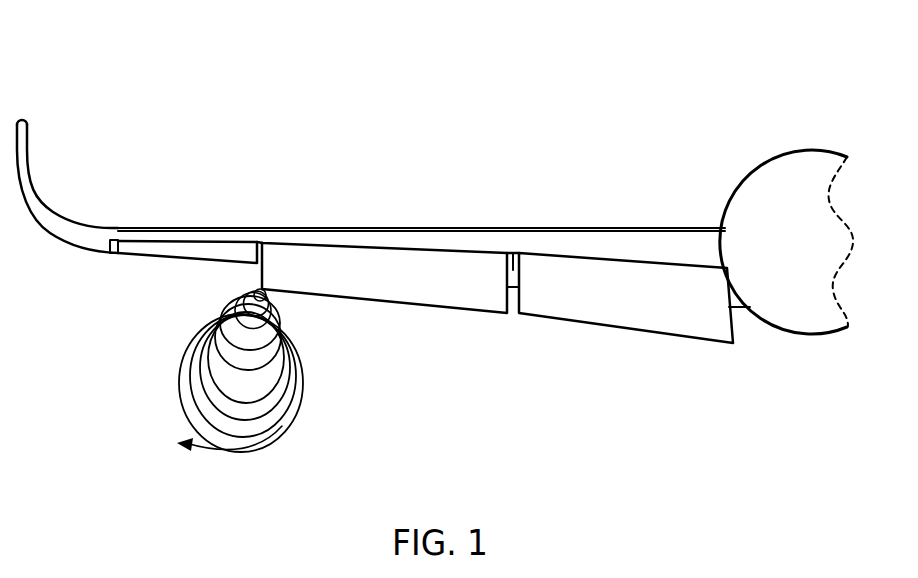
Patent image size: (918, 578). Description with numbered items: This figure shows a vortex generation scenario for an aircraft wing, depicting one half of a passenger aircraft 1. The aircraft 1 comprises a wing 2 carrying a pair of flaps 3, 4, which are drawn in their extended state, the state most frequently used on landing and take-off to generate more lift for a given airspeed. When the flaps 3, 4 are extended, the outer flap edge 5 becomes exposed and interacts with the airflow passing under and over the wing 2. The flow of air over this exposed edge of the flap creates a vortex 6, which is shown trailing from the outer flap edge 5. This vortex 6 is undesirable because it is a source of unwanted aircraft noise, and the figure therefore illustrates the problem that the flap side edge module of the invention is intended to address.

The passenger aircraft 1 is at (746, 112).
The wing 2 is at (493, 227).
The flap 3 is at (623, 330).
The flap 4 is at (418, 303).
The outer flap edge 5 is at (261, 287).
The vortex 6 is at (300, 395).